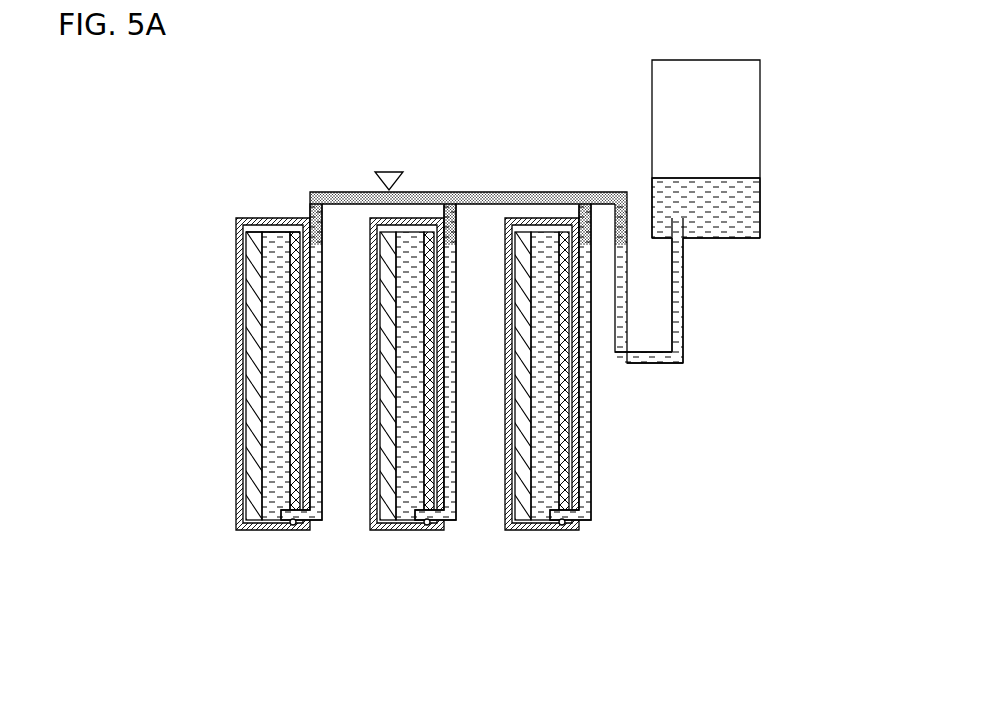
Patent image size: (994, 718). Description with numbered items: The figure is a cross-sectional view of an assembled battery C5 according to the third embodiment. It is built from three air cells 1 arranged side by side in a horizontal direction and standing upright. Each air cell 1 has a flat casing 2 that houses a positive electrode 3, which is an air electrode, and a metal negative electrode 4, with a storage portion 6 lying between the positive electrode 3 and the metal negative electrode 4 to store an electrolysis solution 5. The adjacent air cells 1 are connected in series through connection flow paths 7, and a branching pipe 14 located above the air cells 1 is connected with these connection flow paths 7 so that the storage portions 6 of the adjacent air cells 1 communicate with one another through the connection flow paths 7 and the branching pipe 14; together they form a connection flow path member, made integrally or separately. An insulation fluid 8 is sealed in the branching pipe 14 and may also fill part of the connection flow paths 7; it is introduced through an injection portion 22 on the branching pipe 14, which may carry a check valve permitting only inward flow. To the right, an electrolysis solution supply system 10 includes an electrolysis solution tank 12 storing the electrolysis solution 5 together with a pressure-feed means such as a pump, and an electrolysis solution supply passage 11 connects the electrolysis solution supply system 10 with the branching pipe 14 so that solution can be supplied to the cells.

The air cell 1 is at (497, 395).
The casing 2 is at (238, 274).
The positive electrode 3 is at (293, 333).
The metal negative electrode 4 is at (258, 392).
The electrolysis solution 5 is at (272, 457).
The storage portion 6 is at (275, 237).
The connection flow path 7 is at (318, 490).
The insulation fluid 8 is at (568, 192).
The electrolysis solution supply system 10 is at (727, 264).
The electrolysis solution supply passage 11 is at (683, 340).
The electrolysis solution tank 12 is at (760, 122).
The branching pipe 14 is at (477, 192).
The injection portion 22 is at (390, 172).
The assembled battery C5 is at (530, 108).